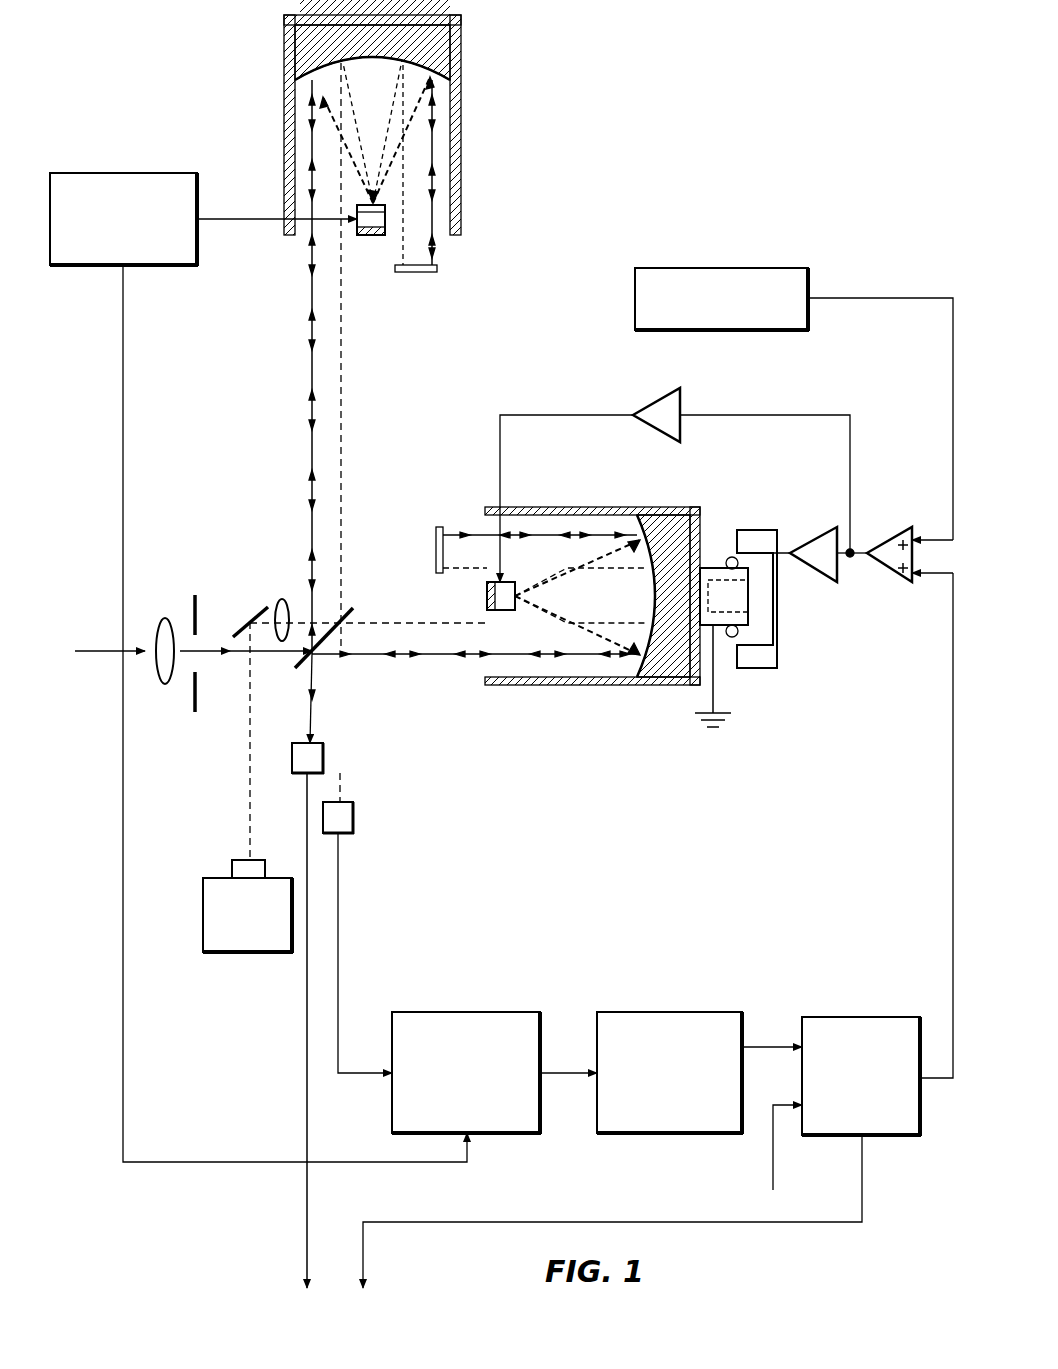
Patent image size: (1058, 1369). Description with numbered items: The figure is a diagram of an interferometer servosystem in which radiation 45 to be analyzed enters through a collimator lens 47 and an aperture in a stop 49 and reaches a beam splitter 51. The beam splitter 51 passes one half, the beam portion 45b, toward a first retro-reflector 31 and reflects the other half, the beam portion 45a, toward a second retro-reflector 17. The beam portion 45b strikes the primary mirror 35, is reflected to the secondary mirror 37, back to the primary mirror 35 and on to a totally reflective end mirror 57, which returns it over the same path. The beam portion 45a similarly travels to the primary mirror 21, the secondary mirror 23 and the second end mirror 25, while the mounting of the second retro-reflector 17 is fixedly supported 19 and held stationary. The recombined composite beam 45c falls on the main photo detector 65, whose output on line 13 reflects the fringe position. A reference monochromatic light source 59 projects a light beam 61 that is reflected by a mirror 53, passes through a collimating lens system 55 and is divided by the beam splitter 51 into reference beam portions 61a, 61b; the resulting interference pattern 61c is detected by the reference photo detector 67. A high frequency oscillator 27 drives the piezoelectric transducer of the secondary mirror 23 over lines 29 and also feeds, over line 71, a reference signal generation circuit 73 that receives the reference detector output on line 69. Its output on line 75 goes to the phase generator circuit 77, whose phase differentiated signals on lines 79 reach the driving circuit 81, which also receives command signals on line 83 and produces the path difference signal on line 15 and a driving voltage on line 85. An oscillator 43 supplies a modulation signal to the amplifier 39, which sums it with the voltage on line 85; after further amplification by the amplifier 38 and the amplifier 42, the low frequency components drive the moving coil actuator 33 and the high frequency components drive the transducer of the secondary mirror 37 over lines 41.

The output line of photo detector 13 is at (305, 1256).
The path difference signal line 15 is at (363, 1262).
The second retro-reflector 17 is at (462, 150).
The fixed support 19 is at (462, 19).
The primary mirror 21 is at (440, 57).
The secondary mirror 23 is at (392, 240).
The second end mirror 25 is at (437, 273).
The high frequency oscillator 27 is at (195, 173).
The lines 29 is at (238, 232).
The first retro-reflector 31 is at (640, 507).
The moving coil actuator 33 is at (740, 540).
The primary mirror 35 is at (553, 685).
The secondary mirror 37 is at (515, 610).
The amplifier 38 is at (797, 598).
The amplifier 39 is at (908, 527).
The lines 41 is at (730, 415).
The amplifier 42 is at (633, 412).
The oscillator 43 is at (730, 268).
The radiation 45 is at (96, 653).
The beam portion 45a is at (312, 338).
The beam portion 45b is at (425, 657).
The composite beam 45c is at (312, 705).
The lens 47 is at (170, 620).
The stop 49 is at (195, 712).
The beam splitter 51 is at (348, 608).
The mirror 53 is at (254, 605).
The collimating lens system 55 is at (285, 598).
The end mirror 57 is at (436, 530).
The reference monochromatic light source 59 is at (203, 940).
The light beam 61 is at (249, 786).
The reference beam portion 61a is at (343, 403).
The reference beam portion 61b is at (385, 622).
The interference pattern 61c is at (343, 770).
The photo detector 65 is at (300, 743).
The reference photo detector 67 is at (353, 815).
The line 69 is at (356, 1078).
The line 71 is at (123, 410).
The reference signal generation circuit 73 is at (490, 1012).
The line 75 is at (570, 1078).
The phase generator circuit 77 is at (672, 1012).
The lines 79 is at (773, 1045).
The driving circuit 81 is at (860, 1017).
The line 83 is at (773, 1170).
The line 85 is at (953, 882).